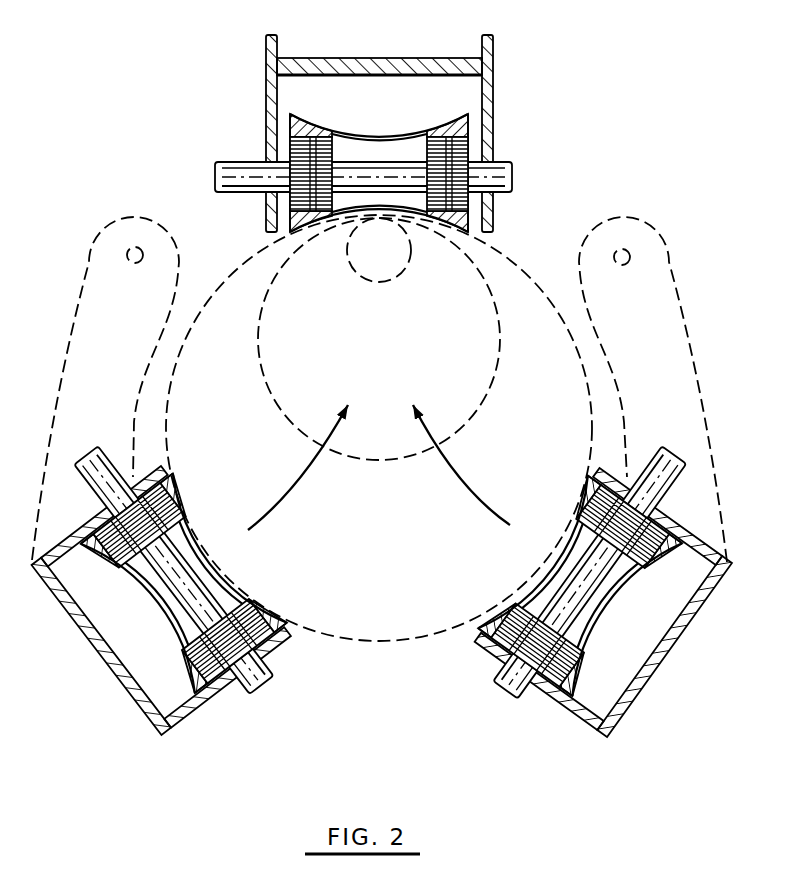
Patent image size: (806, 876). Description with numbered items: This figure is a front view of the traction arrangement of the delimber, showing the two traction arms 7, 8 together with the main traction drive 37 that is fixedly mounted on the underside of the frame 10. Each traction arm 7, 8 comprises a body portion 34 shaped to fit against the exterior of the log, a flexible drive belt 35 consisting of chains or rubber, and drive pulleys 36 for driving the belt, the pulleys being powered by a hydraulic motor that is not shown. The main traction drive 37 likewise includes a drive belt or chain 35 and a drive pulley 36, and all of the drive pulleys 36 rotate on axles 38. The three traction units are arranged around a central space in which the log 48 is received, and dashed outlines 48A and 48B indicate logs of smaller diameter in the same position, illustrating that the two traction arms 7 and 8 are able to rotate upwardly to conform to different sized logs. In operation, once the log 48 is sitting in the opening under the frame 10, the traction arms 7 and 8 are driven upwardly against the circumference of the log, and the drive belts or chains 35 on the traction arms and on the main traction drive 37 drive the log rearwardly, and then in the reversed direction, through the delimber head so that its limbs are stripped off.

The traction arm 7 is at (575, 720).
The traction arm 8 is at (118, 694).
The frame 10 is at (493, 80).
The body portion 34 is at (202, 712).
The flexible drive belt 35 is at (327, 228).
The drive pulley 36 is at (438, 152).
The main traction drive 37 is at (357, 130).
The axle 38 is at (508, 162).
The log 48 is at (422, 630).
The intermediate pipe 48A is at (490, 363).
The small pipe 48B is at (390, 280).